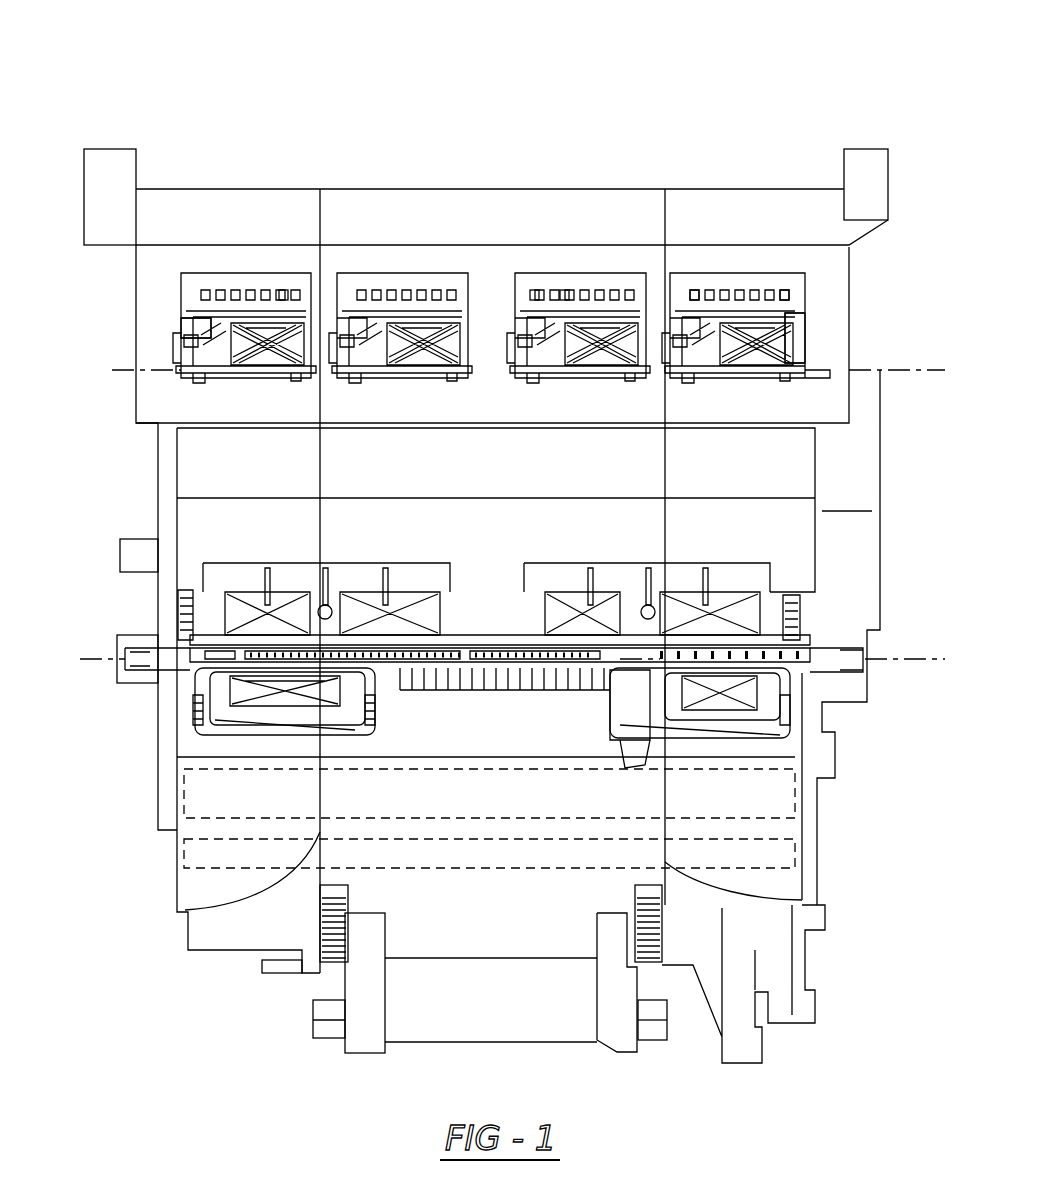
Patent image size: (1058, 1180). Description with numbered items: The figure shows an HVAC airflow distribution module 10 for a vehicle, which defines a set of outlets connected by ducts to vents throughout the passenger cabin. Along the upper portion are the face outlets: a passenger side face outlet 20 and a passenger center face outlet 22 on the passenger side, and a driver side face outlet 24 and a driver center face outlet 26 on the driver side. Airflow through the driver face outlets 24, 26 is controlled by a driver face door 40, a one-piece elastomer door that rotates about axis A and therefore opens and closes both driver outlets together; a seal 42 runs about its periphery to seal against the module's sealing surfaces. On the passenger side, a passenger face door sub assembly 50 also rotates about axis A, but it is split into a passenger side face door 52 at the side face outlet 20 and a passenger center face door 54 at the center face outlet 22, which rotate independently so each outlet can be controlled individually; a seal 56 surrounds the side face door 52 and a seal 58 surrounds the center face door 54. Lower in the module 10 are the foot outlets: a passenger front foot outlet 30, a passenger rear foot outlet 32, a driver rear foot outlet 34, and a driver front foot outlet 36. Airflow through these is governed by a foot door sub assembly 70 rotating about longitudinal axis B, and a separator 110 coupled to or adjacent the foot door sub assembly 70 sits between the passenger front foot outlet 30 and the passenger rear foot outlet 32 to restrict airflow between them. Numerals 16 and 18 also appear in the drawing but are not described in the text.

The HVAC airflow distribution module 10 is at (107, 43).
The first stator 16 is at (184, 795).
The second stator 18 is at (184, 858).
The passenger side face outlet 20 is at (790, 300).
The passenger center face outlet 22 is at (603, 275).
The driver side face outlet 24 is at (232, 278).
The driver center face outlet 26 is at (405, 278).
The passenger front foot outlet 30 is at (817, 852).
The passenger rear foot outlet 32 is at (648, 965).
The driver rear foot outlet 34 is at (330, 965).
The driver front foot outlet 36 is at (177, 886).
The driver face door 40 is at (185, 300).
The seal 42 is at (283, 300).
The passenger face door sub assembly 50 is at (675, 300).
The passenger side face door 52 is at (796, 305).
The passenger center face door 54 is at (537, 298).
The seal 56 is at (778, 278).
The seal 58 is at (565, 300).
The foot door sub assembly 70 is at (193, 625).
The separator 110 is at (650, 752).